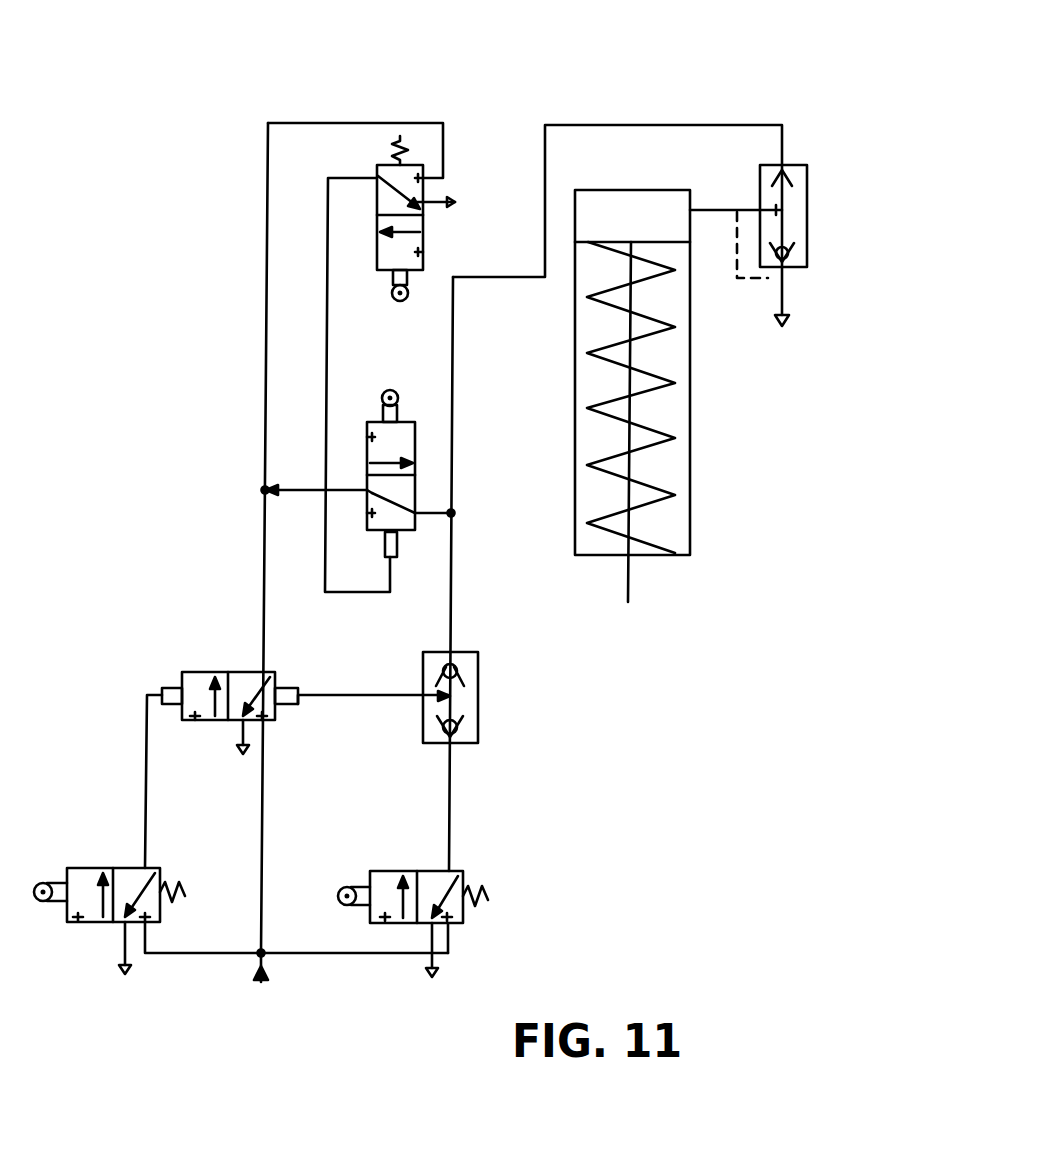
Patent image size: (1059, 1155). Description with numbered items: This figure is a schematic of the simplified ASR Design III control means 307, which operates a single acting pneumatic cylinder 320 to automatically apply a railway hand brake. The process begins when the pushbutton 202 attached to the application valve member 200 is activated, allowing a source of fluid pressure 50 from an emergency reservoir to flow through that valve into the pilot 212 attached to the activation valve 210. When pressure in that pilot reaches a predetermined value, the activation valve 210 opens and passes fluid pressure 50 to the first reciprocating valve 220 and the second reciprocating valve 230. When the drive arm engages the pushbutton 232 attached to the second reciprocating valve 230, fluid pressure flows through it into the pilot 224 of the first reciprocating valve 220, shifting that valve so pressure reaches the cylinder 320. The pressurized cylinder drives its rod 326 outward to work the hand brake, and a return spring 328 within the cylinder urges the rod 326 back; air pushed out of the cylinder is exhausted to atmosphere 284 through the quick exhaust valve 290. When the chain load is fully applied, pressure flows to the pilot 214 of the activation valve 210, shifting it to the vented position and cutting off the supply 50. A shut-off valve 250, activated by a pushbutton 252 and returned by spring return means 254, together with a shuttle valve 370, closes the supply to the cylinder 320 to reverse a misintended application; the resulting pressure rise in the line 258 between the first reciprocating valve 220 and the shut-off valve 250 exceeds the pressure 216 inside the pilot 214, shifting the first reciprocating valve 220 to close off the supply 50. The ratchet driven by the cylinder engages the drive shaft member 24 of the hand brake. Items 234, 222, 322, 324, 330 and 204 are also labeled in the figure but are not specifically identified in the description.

The control means 307 is at (196, 222).
The second reciprocating valve 230 is at (376, 175).
The spring 234 is at (398, 145).
The pushbutton 232 is at (402, 302).
The first reciprocating valve 220 is at (413, 538).
The roller actuator 222 is at (380, 393).
The pilot 224 is at (384, 541).
The single acting pneumatic cylinder 320 is at (676, 405).
The cylinder 322 is at (690, 462).
The piston 324 is at (663, 241).
The return spring 328 is at (598, 421).
The rod 326 is at (632, 586).
The conduit 330 is at (695, 210).
The quick exhaust valve 290 is at (808, 187).
The atmosphere 284 is at (791, 322).
The shuttle valve 370 is at (478, 688).
The line 258 is at (397, 700).
The activation valve 210 is at (243, 672).
The pilot 212 is at (171, 688).
The pilot 214 is at (291, 688).
The pressure 216 is at (289, 706).
The application valve member 200 is at (130, 868).
The pushbutton 202 is at (42, 882).
The spring 204 is at (186, 896).
The shut-off valve 250 is at (425, 871).
The pushbutton 252 is at (349, 906).
The spring return means 254 is at (490, 898).
The drive shaft member 24 is at (240, 750).
The source of fluid pressure 50 is at (263, 979).